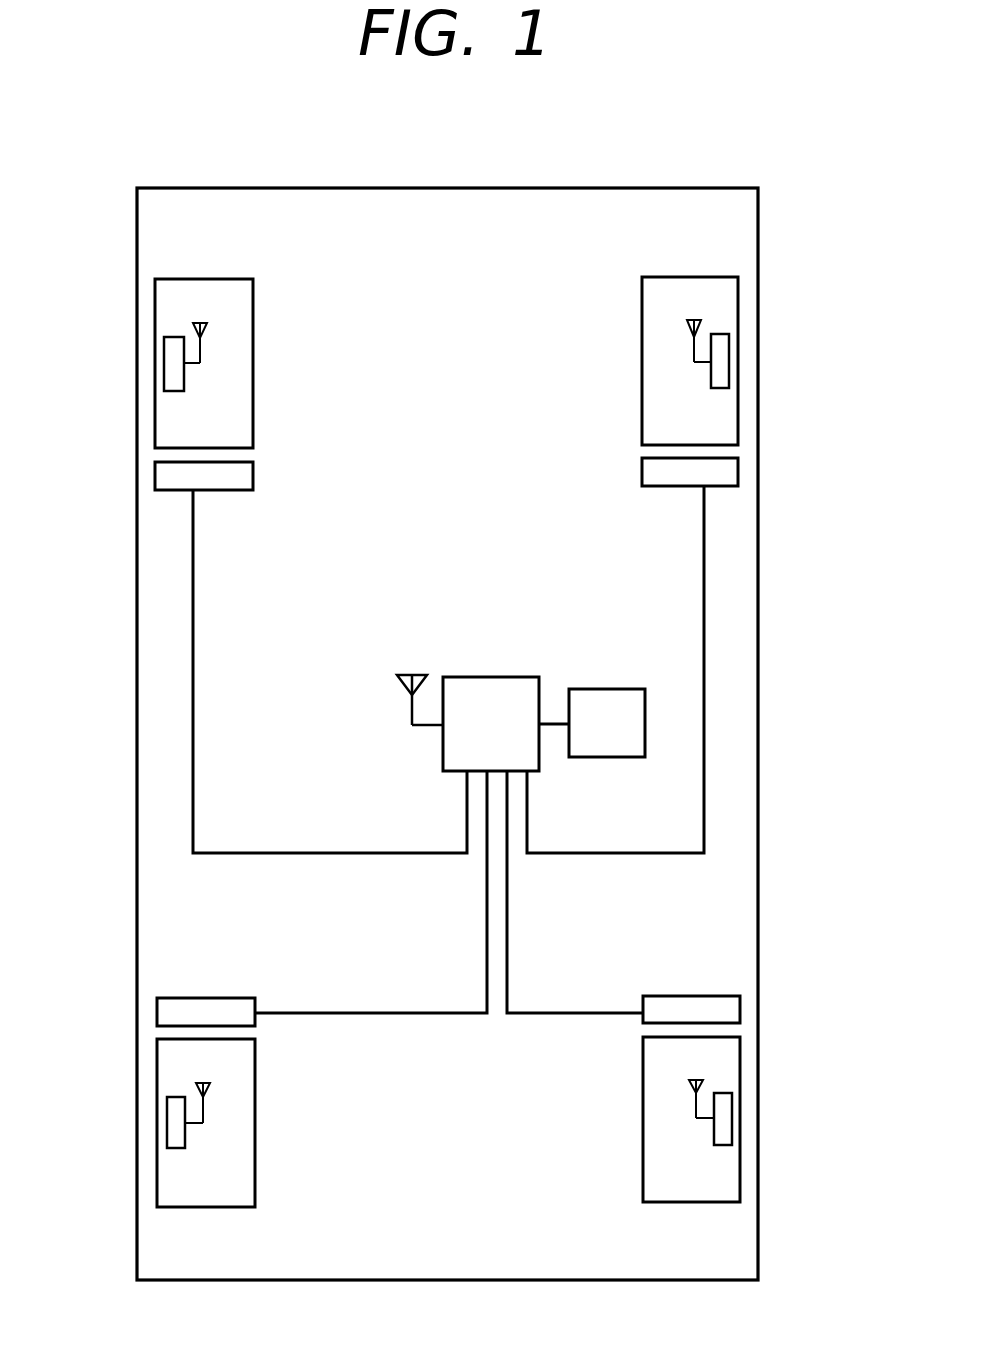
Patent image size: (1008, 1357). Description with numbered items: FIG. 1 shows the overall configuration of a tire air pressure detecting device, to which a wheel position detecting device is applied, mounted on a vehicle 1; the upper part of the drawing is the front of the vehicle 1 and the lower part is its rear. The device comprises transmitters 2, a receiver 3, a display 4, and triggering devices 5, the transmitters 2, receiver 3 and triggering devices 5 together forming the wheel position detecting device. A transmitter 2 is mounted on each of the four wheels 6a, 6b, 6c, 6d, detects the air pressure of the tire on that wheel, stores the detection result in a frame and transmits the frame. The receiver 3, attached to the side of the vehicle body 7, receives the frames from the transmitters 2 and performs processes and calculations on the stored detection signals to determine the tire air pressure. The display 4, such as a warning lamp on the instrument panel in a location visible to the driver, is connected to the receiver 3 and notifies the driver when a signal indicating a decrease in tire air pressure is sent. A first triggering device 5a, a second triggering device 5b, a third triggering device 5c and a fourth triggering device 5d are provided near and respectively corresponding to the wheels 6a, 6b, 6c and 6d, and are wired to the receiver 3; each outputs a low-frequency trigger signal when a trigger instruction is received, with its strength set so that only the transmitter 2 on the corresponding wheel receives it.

The vehicle 1 is at (646, 180).
The transmitter 2 is at (177, 337).
The receiver 3 is at (498, 677).
The display 4 is at (608, 757).
The triggering device 5 is at (451, 707).
The first triggering device 5a is at (738, 475).
The second triggering device 5b is at (155, 475).
The third triggering device 5c is at (740, 1008).
The fourth triggering device 5d is at (157, 1013).
The wheel 6a is at (689, 277).
The wheel 6b is at (208, 279).
The wheel 6c is at (692, 1202).
The wheel 6d is at (202, 1207).
The vehicle body 7 is at (758, 650).